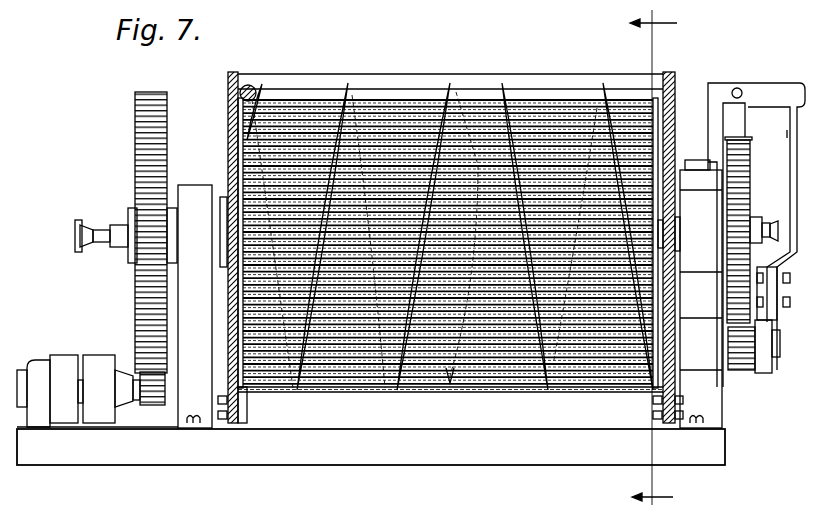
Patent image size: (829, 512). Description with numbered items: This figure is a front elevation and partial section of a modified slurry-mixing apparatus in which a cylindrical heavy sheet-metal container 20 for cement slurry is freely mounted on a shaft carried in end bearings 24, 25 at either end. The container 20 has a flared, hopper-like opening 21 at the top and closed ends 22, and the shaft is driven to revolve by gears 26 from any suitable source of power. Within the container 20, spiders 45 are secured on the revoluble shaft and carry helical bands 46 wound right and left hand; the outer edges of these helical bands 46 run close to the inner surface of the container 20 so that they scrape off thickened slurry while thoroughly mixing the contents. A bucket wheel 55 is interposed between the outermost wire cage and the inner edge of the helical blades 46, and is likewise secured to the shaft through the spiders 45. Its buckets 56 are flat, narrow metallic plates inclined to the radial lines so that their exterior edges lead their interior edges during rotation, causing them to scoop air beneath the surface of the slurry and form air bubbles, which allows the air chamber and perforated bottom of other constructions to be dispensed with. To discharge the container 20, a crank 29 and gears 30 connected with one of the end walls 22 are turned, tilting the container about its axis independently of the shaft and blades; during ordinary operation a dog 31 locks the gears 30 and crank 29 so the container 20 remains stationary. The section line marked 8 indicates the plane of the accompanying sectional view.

The section line 8- 8 is at (643, 260).
The container 20 is at (413, 97).
The hopper-like opening 21 is at (295, 87).
The closed ends 22 is at (238, 94).
The end bearing 24 is at (200, 196).
The end bearing 25 is at (703, 397).
The gears 26 is at (135, 141).
The crank 29 is at (788, 135).
The gears 30 is at (740, 213).
The dog 31 is at (773, 88).
The spiders 45 is at (246, 90).
The helical bands 46 is at (362, 92).
The bucket wheel 55 is at (655, 118).
The buckets 56 is at (578, 113).